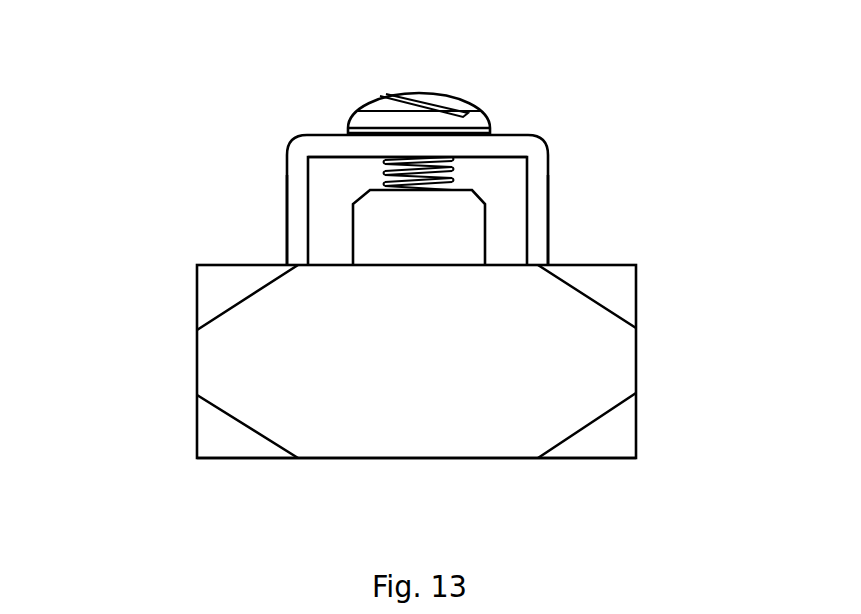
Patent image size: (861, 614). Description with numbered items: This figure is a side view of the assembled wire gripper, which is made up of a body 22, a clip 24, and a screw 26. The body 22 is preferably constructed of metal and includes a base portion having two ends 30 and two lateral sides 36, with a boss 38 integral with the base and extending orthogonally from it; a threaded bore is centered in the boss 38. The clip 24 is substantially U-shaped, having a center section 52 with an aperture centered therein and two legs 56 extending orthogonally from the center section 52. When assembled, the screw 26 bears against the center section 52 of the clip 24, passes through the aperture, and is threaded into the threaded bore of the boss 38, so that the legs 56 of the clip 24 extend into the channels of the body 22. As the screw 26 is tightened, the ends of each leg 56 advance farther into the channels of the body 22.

The body 22 is at (497, 458).
The clip 24 is at (548, 153).
The screw 26 is at (430, 95).
The ends 30 is at (198, 349).
The lateral sides 36 is at (416, 361).
The boss 38 is at (419, 211).
The center section 52 is at (500, 145).
The legs 56 is at (287, 213).